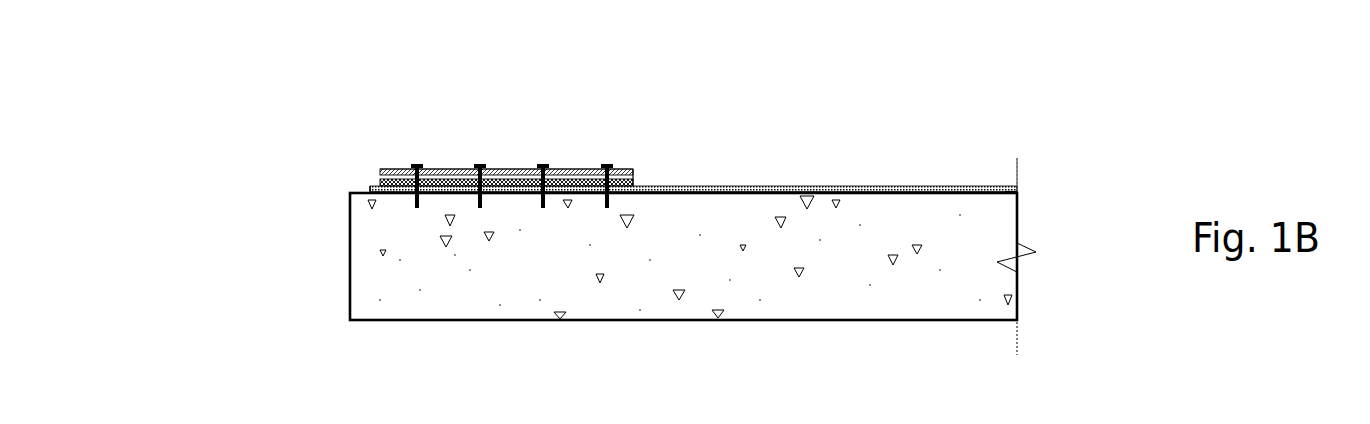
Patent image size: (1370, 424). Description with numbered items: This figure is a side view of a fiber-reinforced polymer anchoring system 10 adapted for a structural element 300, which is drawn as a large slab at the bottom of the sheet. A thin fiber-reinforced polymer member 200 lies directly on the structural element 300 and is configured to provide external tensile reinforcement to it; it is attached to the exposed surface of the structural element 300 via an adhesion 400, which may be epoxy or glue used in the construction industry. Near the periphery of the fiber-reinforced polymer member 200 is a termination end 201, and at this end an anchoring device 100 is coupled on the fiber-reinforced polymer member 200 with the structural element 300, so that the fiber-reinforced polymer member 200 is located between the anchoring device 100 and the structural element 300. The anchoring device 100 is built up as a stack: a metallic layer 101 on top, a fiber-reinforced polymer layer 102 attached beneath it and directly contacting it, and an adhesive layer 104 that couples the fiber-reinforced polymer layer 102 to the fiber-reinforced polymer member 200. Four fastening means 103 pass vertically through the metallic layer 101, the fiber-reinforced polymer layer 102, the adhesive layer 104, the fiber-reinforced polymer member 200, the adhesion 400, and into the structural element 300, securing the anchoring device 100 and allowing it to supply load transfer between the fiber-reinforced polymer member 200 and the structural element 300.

The fiber-reinforced polymer anchoring system 10 is at (1152, 112).
The anchoring device 100 is at (272, 78).
The metallic layer 101 is at (457, 167).
The fiber-reinforced polymer layer 102 is at (577, 170).
The fastening means 103 is at (417, 166).
The adhesive layer 104 is at (635, 175).
The fiber-reinforced polymer member 200 is at (848, 183).
The termination end 201 is at (368, 184).
The structural element 300 is at (932, 233).
The adhesion 400 is at (1018, 188).